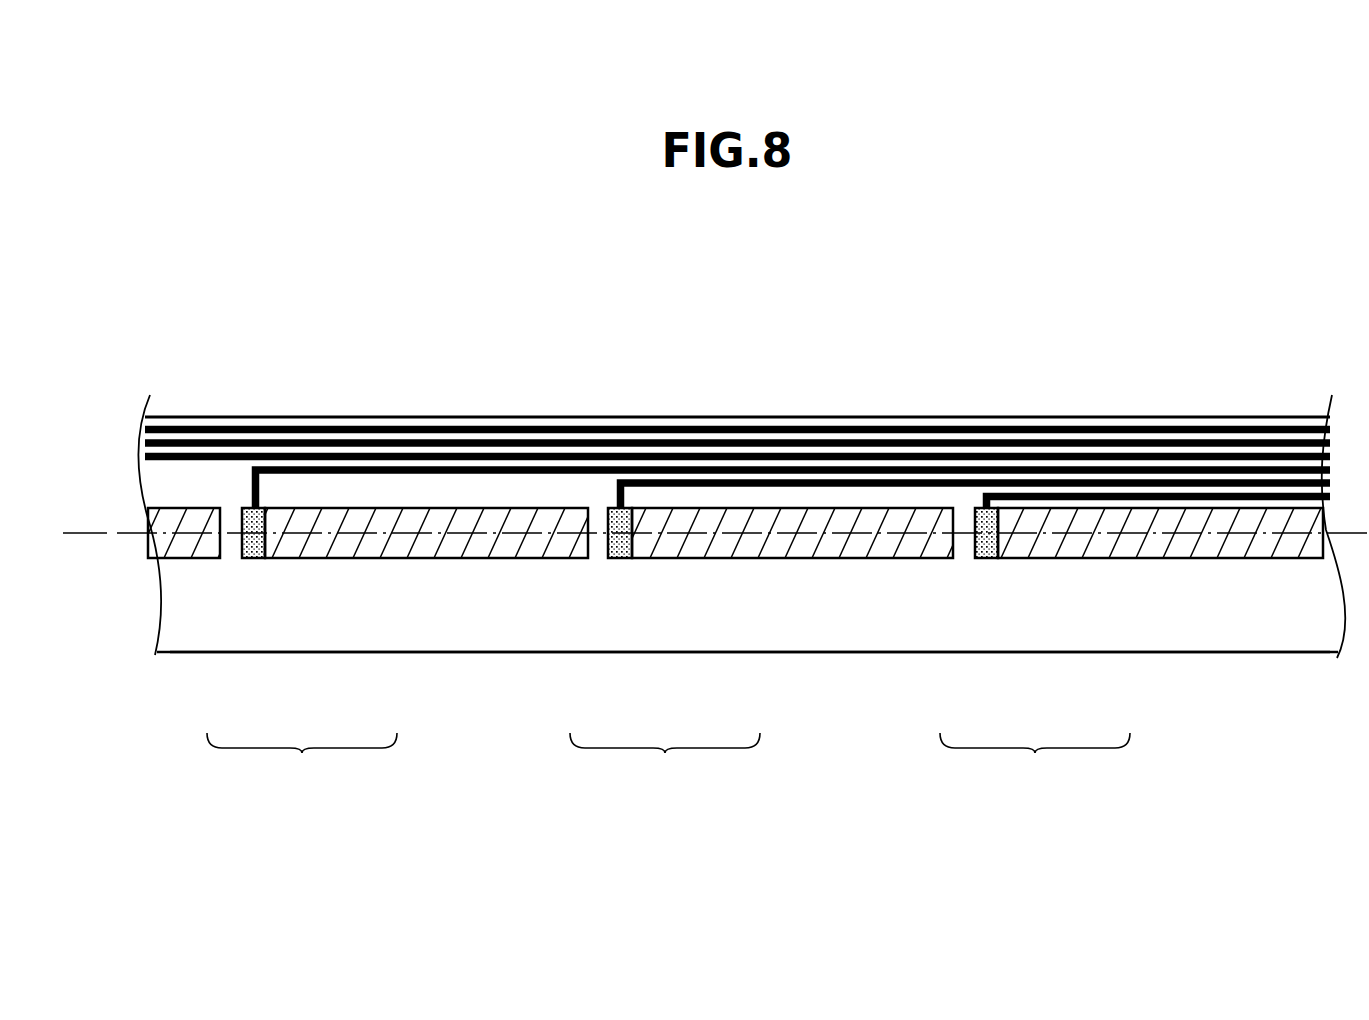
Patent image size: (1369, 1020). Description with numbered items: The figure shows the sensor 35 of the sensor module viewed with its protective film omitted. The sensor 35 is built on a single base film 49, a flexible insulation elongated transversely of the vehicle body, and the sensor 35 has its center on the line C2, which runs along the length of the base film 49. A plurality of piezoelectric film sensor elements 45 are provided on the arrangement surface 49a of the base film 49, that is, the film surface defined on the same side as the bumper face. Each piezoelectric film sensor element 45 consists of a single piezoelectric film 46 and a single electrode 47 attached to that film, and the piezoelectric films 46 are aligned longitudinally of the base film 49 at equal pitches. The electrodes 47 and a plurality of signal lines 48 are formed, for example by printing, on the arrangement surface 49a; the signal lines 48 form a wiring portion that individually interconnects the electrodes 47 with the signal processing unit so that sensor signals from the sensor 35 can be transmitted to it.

The sensor 35 is at (390, 257).
The piezoelectric film sensor element 45 is at (668, 762).
The piezoelectric film 46 is at (432, 560).
The electrode 47 is at (257, 560).
The signal line 48 is at (662, 430).
The base film 49 is at (1285, 655).
The arrangement surface 49a is at (1230, 595).
The line C2 is at (105, 533).